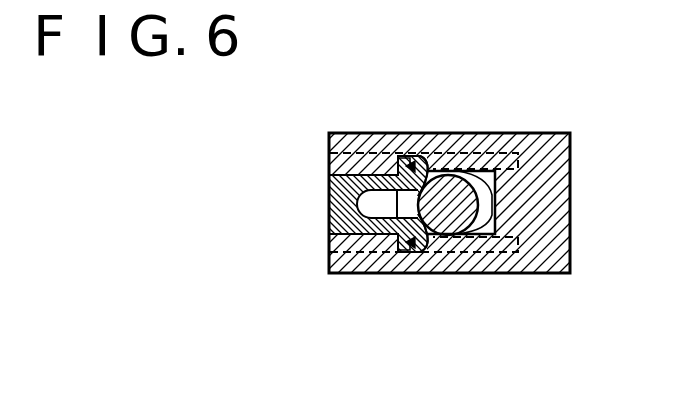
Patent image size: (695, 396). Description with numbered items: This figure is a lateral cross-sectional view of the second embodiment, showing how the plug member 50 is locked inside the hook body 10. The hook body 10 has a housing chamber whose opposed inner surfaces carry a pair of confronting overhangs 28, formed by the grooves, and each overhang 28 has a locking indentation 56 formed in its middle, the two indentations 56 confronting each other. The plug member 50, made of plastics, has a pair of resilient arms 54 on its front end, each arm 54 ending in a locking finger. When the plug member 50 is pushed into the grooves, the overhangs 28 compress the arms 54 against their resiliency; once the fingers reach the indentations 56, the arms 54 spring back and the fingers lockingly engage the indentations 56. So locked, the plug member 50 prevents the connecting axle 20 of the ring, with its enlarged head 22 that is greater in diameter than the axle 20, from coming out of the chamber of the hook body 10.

The hook body 10 is at (528, 133).
The connecting axle 20 is at (480, 203).
The enlarged head 22 is at (485, 188).
The overhangs 28 is at (457, 163).
The plug member 50 is at (330, 207).
The resilient arms 54 is at (424, 158).
The locking indentations 56 is at (401, 157).